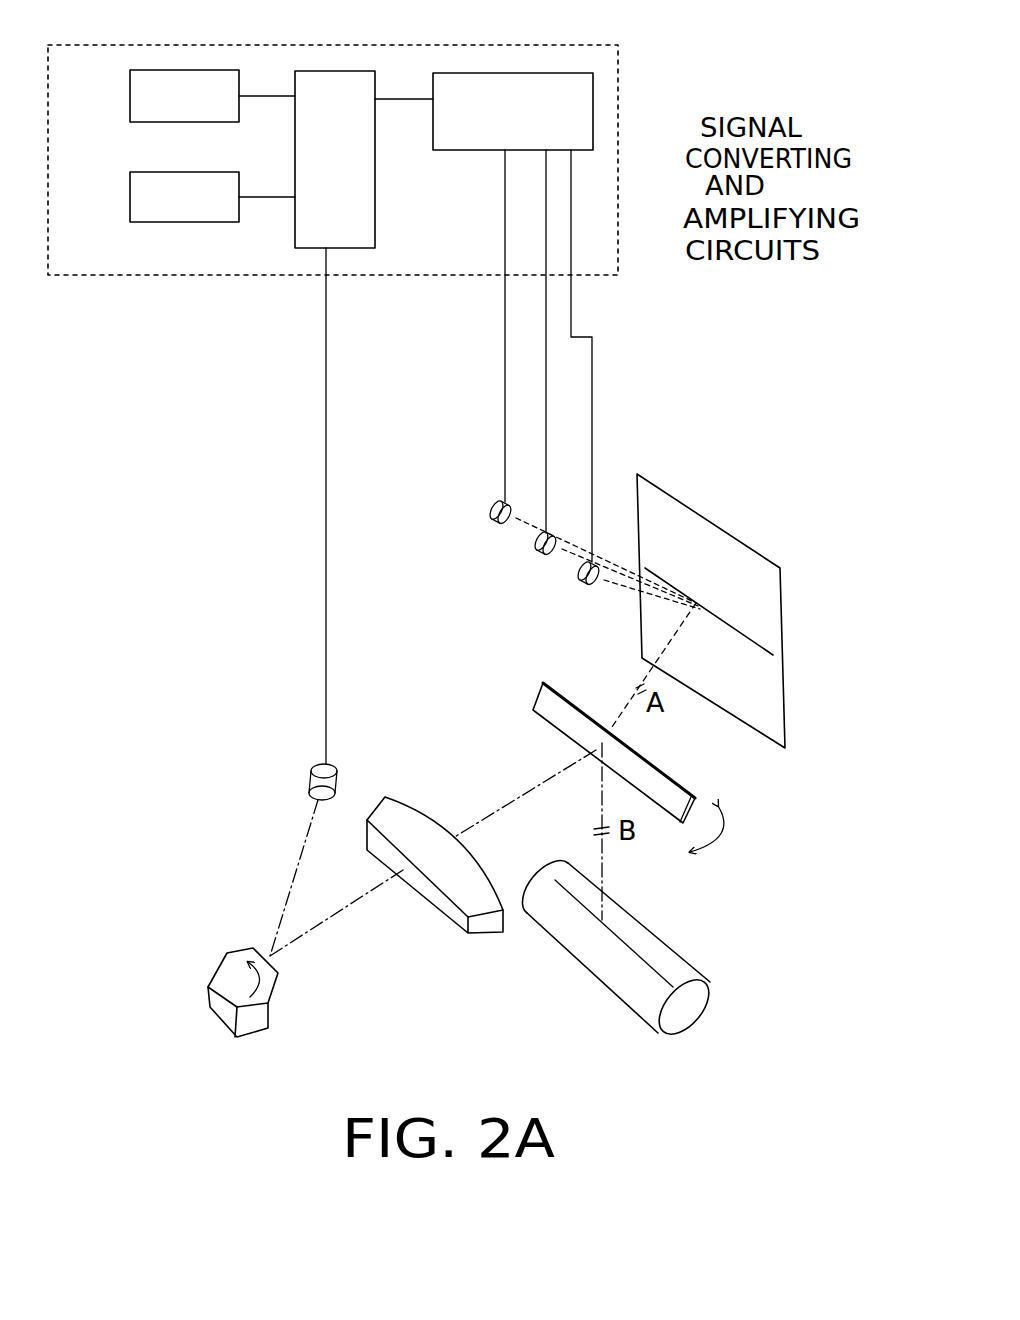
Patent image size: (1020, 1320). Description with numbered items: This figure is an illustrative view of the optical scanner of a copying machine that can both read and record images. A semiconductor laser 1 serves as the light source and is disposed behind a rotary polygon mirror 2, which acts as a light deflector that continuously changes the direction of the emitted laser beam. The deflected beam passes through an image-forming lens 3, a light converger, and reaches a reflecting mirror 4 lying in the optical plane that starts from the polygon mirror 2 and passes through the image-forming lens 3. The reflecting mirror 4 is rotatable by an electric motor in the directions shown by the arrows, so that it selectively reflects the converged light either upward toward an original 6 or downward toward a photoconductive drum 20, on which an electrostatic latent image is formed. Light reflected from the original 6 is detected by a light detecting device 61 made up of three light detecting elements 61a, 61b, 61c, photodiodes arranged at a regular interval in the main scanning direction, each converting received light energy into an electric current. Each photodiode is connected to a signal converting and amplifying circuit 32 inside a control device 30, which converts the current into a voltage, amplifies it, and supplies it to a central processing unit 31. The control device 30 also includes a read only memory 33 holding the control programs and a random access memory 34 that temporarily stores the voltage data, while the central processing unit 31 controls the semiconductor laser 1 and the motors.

The semiconductor laser 1 is at (306, 783).
The rotary polygon mirror 2 is at (246, 950).
The image-forming lens 3 is at (470, 935).
The reflecting mirror 4 is at (553, 679).
The original 6 is at (785, 600).
The photoconductive drum 20 is at (704, 977).
The control device 30 is at (621, 96).
The central processing unit 31 is at (338, 80).
The signal converting and amplifying circuit 32 is at (585, 122).
The read only memory 33 is at (208, 80).
The random access memory 34 is at (212, 184).
The light detecting device 61 is at (526, 551).
The light detecting element 61a is at (489, 510).
The light detecting element 61b is at (532, 547).
The light detecting element 61c is at (575, 580).